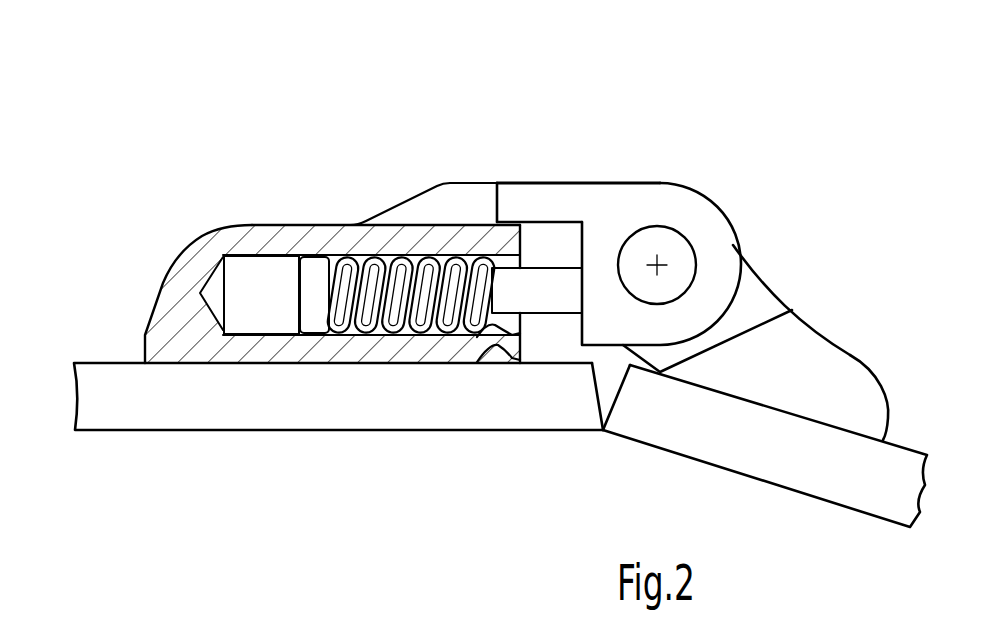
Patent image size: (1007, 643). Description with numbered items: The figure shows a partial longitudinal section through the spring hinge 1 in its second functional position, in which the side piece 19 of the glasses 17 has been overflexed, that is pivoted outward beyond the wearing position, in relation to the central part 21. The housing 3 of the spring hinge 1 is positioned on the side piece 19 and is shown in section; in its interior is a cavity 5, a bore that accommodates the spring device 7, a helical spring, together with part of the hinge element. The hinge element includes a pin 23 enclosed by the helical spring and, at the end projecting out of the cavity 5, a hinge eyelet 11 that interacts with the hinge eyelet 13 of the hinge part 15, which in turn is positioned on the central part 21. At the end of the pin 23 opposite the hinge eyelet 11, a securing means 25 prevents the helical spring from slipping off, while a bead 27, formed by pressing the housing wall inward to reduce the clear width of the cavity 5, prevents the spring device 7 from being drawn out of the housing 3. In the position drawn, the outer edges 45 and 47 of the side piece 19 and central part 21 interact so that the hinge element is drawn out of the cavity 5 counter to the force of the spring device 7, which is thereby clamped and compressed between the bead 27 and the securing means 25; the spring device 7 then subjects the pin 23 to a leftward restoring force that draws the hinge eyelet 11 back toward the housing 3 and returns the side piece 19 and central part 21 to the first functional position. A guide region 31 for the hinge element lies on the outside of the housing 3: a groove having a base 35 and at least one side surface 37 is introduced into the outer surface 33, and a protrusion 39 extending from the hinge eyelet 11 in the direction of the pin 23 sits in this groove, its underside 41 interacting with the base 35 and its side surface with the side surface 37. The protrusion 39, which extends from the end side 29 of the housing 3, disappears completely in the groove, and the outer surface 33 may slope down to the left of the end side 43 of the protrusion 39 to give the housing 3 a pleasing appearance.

The spring hinge 1 is at (483, 306).
The housing 3 is at (350, 306).
The cavity 5 is at (213, 293).
The spring device 7 is at (334, 242).
The hinge eyelet 11 is at (693, 244).
The hinge eyelet 13 is at (748, 306).
The hinge part 15 is at (804, 380).
The glasses 17 is at (120, 312).
The side piece 19 is at (338, 453).
The central part 21 is at (765, 447).
The pin 23 is at (530, 292).
The securing means 25 is at (308, 285).
The bead 27 is at (505, 352).
The end side 29 is at (527, 246).
The guide region 31 is at (415, 178).
The outer surface 33 is at (193, 237).
The base 35 is at (393, 223).
The side surface 37 is at (455, 210).
The protrusion 39 is at (570, 203).
The underside 41 is at (512, 208).
The end side 43 is at (488, 205).
The outer edge 45 is at (590, 410).
The outer edge 47 is at (610, 425).